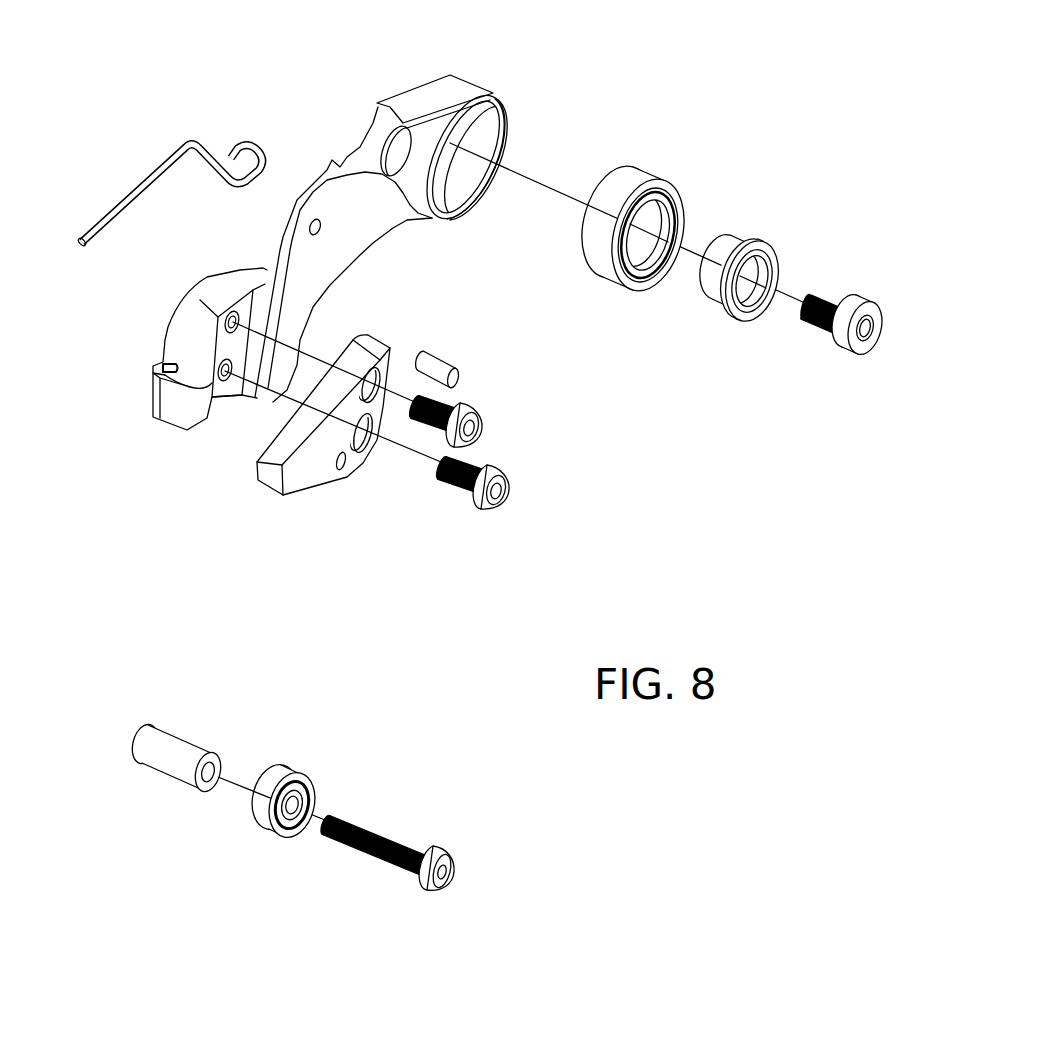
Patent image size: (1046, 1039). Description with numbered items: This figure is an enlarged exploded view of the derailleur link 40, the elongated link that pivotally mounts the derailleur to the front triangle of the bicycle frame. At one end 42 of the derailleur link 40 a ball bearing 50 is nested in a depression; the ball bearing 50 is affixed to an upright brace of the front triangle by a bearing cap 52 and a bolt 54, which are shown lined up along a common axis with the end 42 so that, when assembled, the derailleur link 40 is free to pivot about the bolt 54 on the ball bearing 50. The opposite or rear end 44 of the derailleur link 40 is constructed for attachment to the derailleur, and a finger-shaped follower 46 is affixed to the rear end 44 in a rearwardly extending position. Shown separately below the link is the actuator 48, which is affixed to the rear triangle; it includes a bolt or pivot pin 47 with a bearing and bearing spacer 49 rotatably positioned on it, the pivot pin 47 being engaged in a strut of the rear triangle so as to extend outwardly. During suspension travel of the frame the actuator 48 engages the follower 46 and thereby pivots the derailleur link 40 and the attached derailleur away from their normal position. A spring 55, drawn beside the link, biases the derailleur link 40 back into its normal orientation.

The derailleur link 40 is at (370, 223).
The end 42 is at (473, 80).
The rear end 44 is at (207, 328).
The follower 46 is at (317, 452).
The bolt (pivot pin) 47 is at (412, 843).
The actuator 48 is at (341, 775).
The bearing and bearing spacer 49 is at (185, 747).
The ball bearing 50 is at (650, 180).
The bearing cap 52 is at (747, 247).
The bolt 54 is at (862, 302).
The spring 55 is at (120, 205).